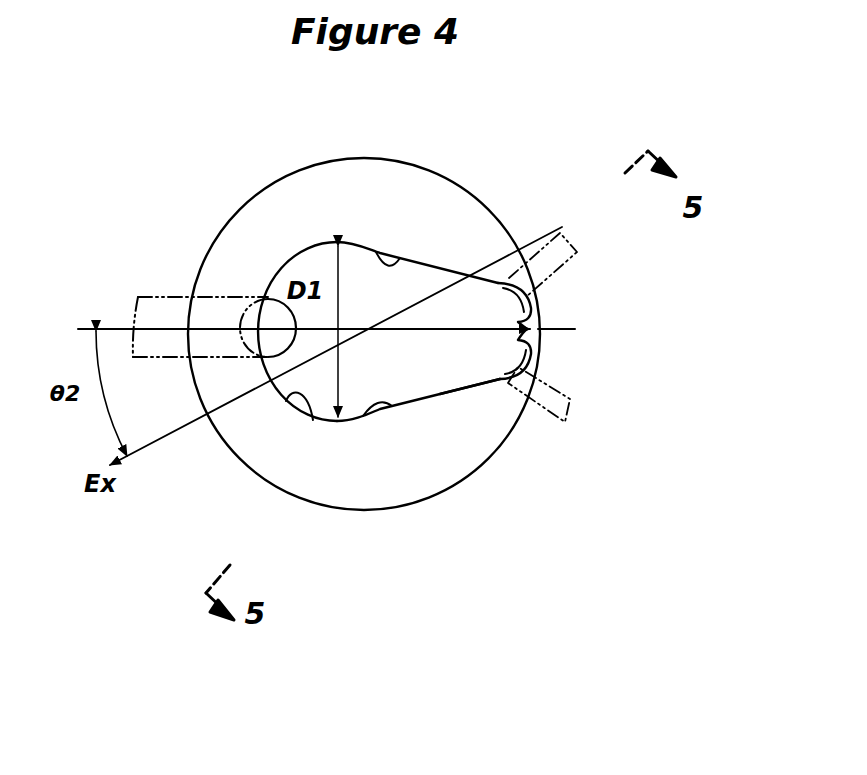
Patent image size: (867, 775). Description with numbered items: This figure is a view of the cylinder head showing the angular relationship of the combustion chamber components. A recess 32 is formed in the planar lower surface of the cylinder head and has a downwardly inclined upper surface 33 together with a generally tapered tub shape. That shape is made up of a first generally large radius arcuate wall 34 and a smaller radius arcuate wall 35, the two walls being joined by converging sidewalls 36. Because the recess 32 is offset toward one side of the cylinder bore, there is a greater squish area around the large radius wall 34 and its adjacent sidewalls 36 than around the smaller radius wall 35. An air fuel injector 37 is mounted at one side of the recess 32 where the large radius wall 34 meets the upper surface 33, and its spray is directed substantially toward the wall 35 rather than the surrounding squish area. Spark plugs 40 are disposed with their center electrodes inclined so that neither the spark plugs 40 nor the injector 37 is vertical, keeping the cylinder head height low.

The recess 32 is at (356, 305).
The upper surface 33 is at (427, 385).
The large radius arcuate wall 34 is at (313, 424).
The smaller radius arcuate wall 35 is at (344, 329).
The converging sidewalls 36 is at (397, 262).
The air fuel injector 37 is at (178, 296).
The spark plugs 40 is at (558, 233).